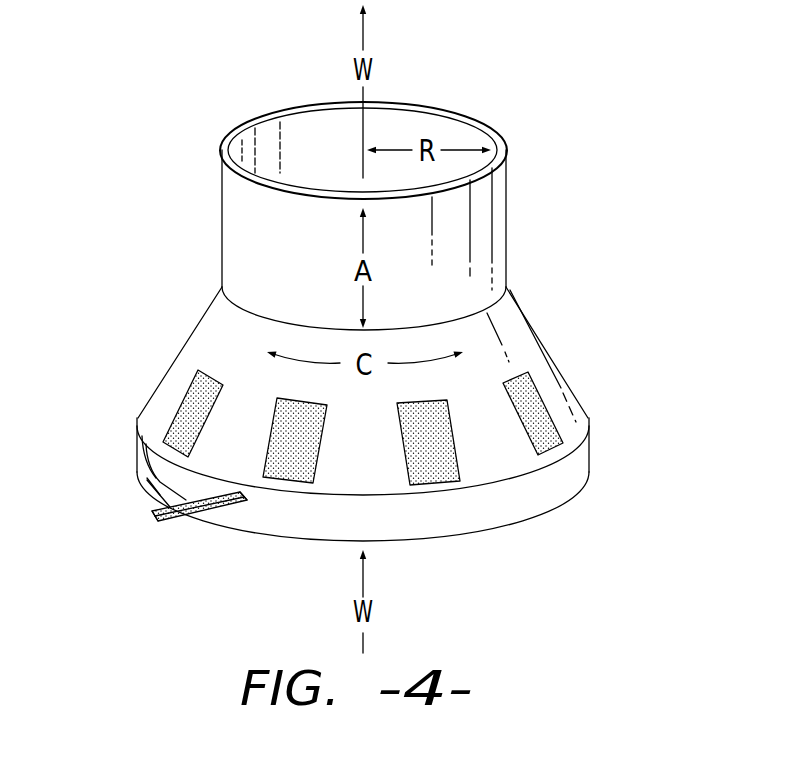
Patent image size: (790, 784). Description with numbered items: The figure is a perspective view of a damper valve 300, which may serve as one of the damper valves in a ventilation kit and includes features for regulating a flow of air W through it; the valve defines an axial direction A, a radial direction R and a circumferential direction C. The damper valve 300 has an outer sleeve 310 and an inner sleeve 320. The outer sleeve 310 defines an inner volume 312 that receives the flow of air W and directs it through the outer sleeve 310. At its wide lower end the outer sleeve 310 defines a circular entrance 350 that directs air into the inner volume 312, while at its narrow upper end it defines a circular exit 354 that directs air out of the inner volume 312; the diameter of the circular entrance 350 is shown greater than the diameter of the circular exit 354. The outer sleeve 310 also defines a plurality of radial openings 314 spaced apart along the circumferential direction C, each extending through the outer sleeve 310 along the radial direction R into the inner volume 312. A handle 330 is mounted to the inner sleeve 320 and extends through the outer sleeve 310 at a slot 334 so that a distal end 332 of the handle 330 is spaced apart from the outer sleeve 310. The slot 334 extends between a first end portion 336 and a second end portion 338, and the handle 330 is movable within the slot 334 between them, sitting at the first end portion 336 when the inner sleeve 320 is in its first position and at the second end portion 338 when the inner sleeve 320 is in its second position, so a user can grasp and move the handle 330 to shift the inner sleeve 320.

The damper valve 300 is at (351, 324).
The outer sleeve 310 is at (517, 347).
The inner volume 312 is at (323, 140).
The radial openings 314 is at (392, 419).
The inner sleeve 320 is at (193, 402).
The handle 330 is at (200, 522).
The distal end 332 is at (147, 525).
The slot 334 is at (145, 477).
The first end portion 336 is at (133, 446).
The second end portion 338 is at (245, 502).
The circular entrance 350 is at (558, 509).
The circular exit 354 is at (243, 181).